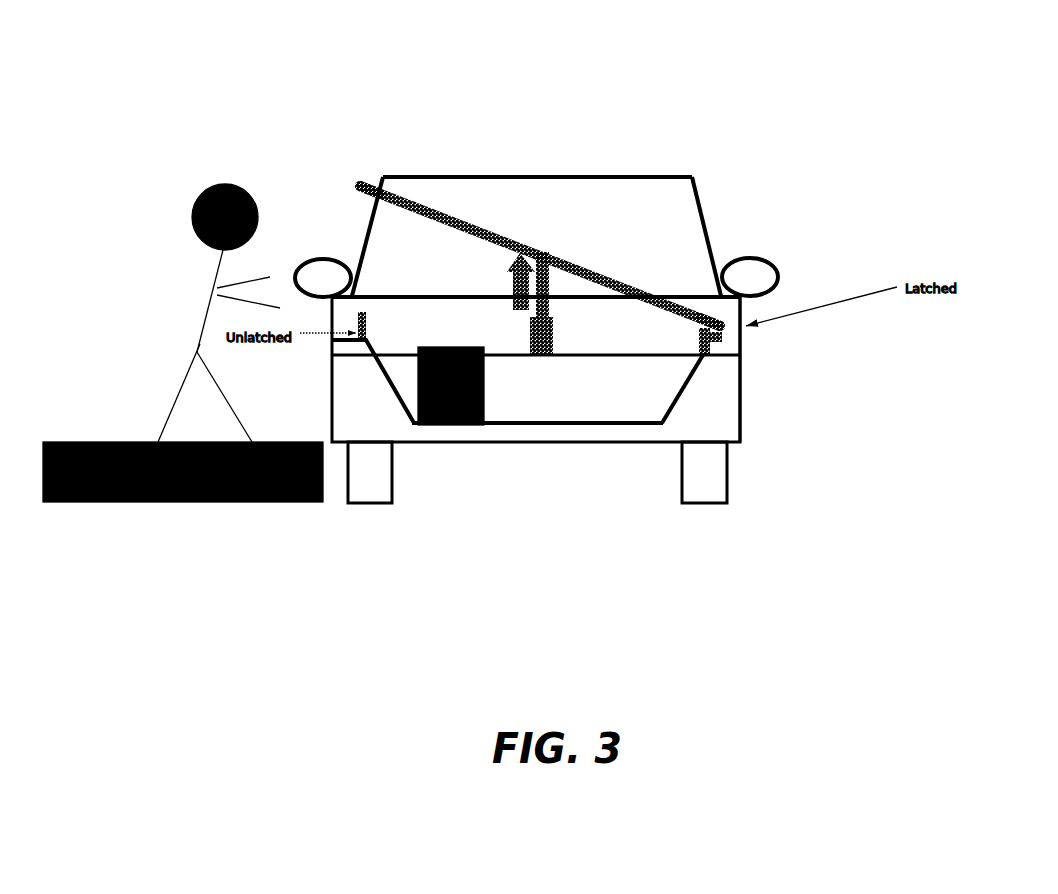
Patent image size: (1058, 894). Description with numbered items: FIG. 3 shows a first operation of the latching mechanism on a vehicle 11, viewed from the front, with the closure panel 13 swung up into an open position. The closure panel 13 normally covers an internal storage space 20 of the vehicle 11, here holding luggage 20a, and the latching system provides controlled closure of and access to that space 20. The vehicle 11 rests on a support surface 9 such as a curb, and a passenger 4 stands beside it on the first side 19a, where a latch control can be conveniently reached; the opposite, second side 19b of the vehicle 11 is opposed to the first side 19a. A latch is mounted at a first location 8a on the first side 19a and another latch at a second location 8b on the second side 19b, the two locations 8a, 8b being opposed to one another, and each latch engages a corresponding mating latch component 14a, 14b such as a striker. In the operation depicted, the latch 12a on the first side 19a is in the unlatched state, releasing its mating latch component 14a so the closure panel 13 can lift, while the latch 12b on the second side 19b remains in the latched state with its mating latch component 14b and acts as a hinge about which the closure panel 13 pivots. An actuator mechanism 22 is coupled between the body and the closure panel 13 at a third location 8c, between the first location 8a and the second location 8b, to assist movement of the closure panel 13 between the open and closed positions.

The passenger 4 is at (190, 190).
The support surface 9 is at (179, 508).
The vehicle 11 is at (802, 183).
The closure panel 13 is at (421, 209).
The mating latch component 14a is at (356, 196).
The mating latch component 14b is at (716, 336).
The first latch 12a is at (367, 313).
The second latch 12b is at (697, 348).
The first side 19a is at (238, 255).
The second side 19b is at (813, 268).
The internal space 20 is at (623, 393).
The luggage 20a is at (454, 427).
The actuator mechanism 22 is at (554, 335).
The first location 8a is at (360, 339).
The second location 8b is at (713, 359).
The third location 8c is at (551, 358).